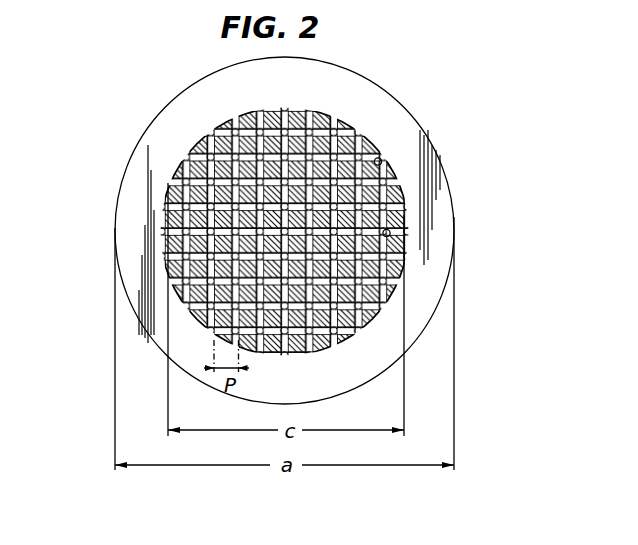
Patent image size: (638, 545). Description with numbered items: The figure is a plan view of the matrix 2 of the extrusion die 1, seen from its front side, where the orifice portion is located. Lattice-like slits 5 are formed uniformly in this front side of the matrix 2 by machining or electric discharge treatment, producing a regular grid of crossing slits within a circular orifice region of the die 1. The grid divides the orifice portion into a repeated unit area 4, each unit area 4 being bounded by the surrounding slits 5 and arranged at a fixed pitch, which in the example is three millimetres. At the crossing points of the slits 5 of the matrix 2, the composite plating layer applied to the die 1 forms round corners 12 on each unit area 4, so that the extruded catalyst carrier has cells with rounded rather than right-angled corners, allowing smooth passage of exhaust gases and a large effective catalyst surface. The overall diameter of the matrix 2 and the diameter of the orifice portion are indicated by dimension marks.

The extrusion die 1 is at (96, 252).
The matrix of the die 2 is at (130, 166).
The unit area of the orifice portion 4 is at (378, 162).
The slit of the die 5 is at (358, 137).
The round corner of the unit area 12 is at (387, 233).